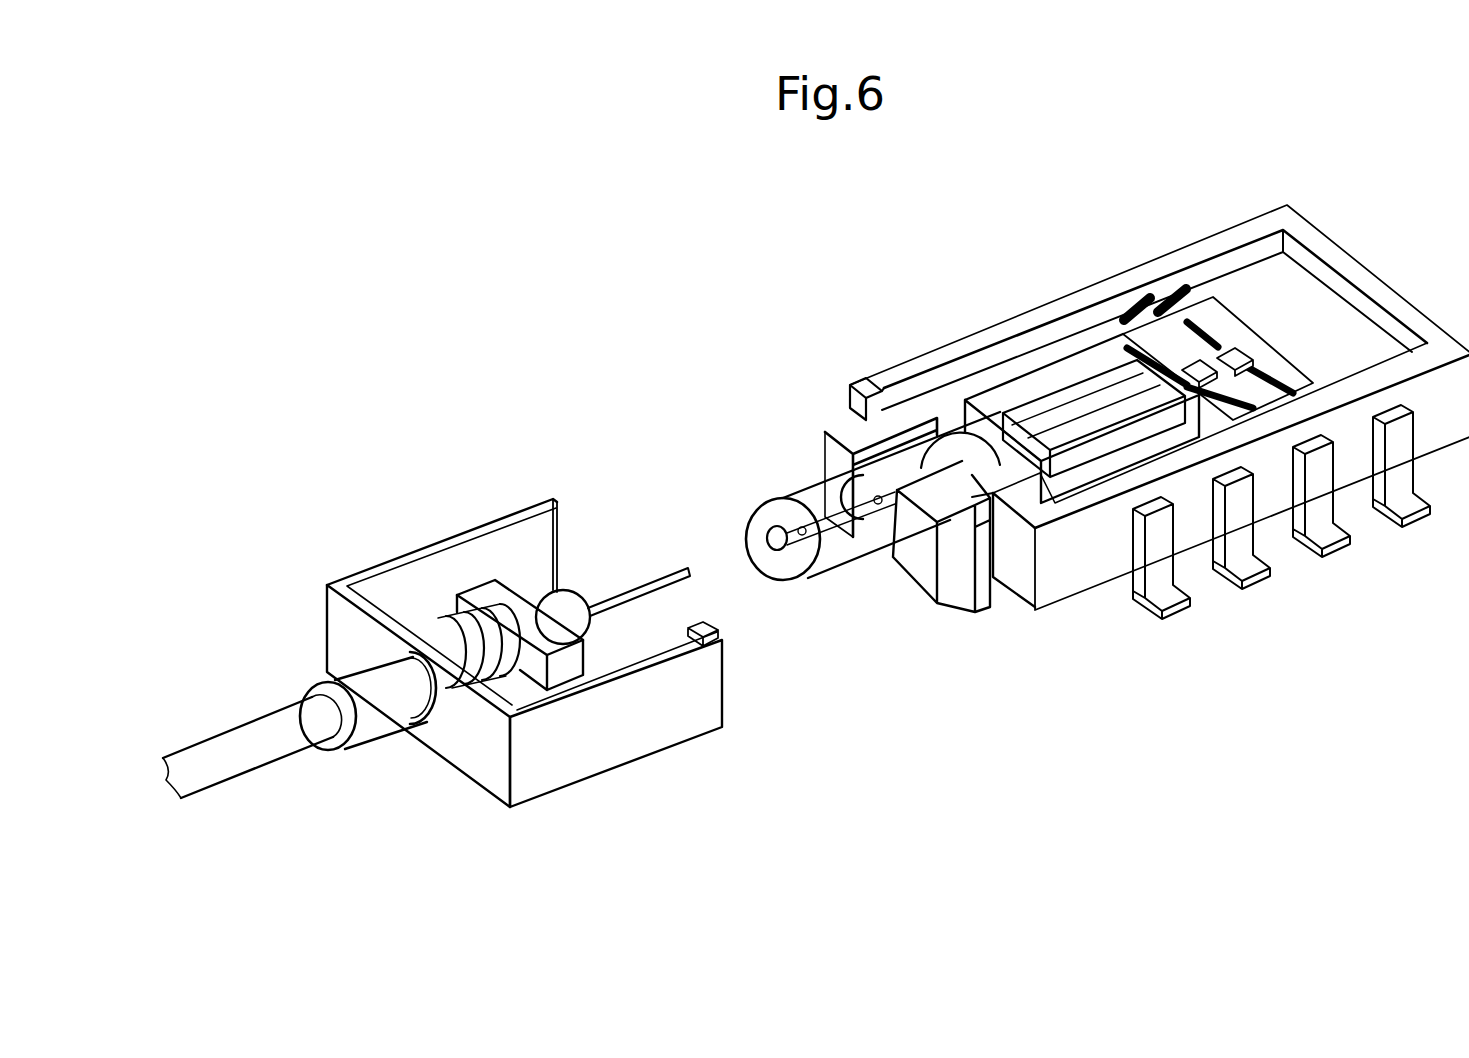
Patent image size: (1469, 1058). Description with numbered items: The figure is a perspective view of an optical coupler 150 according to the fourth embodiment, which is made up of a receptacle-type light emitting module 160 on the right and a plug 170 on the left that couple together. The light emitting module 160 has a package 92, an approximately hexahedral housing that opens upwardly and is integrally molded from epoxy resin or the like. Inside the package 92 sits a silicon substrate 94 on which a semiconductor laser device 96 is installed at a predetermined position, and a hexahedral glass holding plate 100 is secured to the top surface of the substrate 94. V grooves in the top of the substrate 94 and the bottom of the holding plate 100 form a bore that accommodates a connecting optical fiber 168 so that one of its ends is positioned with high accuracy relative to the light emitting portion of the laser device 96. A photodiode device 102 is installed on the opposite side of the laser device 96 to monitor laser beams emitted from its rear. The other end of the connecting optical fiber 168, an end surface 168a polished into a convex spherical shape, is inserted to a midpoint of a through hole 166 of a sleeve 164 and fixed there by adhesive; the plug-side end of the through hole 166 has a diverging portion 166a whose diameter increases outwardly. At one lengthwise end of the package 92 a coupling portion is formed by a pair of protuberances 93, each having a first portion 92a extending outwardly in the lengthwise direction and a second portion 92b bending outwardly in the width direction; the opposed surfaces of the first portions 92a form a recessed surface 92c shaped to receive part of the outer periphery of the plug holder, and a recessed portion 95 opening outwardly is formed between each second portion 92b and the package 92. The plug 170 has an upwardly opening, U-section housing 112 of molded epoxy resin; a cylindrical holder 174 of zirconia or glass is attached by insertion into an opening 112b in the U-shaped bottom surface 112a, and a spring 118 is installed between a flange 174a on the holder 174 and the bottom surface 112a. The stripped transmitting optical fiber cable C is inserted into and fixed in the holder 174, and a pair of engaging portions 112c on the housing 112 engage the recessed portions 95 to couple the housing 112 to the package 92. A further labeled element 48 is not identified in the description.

The optical coupler 150 is at (522, 357).
The plug 170 is at (512, 462).
The light emitting module 160 is at (708, 389).
The housing 112 is at (717, 722).
The bottom surface 112a is at (497, 770).
The opening 112b is at (412, 722).
The engaging portions 112c is at (560, 508).
The transmitting optical fiber cable C is at (278, 730).
The spring 118 is at (440, 632).
The cylindrical holder 174 is at (541, 590).
The flange 174a is at (575, 645).
The optical fiber 48 is at (640, 595).
The package 92 is at (1365, 280).
The first portion 92a is at (857, 428).
The second portion 92b is at (836, 418).
The recessed surface 92c is at (900, 540).
The protuberances 93 is at (732, 330).
The silicon substrate 94 is at (1013, 397).
The recessed portion 95 is at (860, 395).
The semiconductor laser device 96 is at (1187, 368).
The holding plate 100 is at (1100, 410).
The photodiode device 102 is at (1236, 346).
The sleeve 164 is at (808, 484).
The through hole 166 is at (836, 560).
The diverging portion 166a is at (780, 550).
The connecting optical fiber 168 is at (1060, 390).
The end surface 168a is at (890, 545).